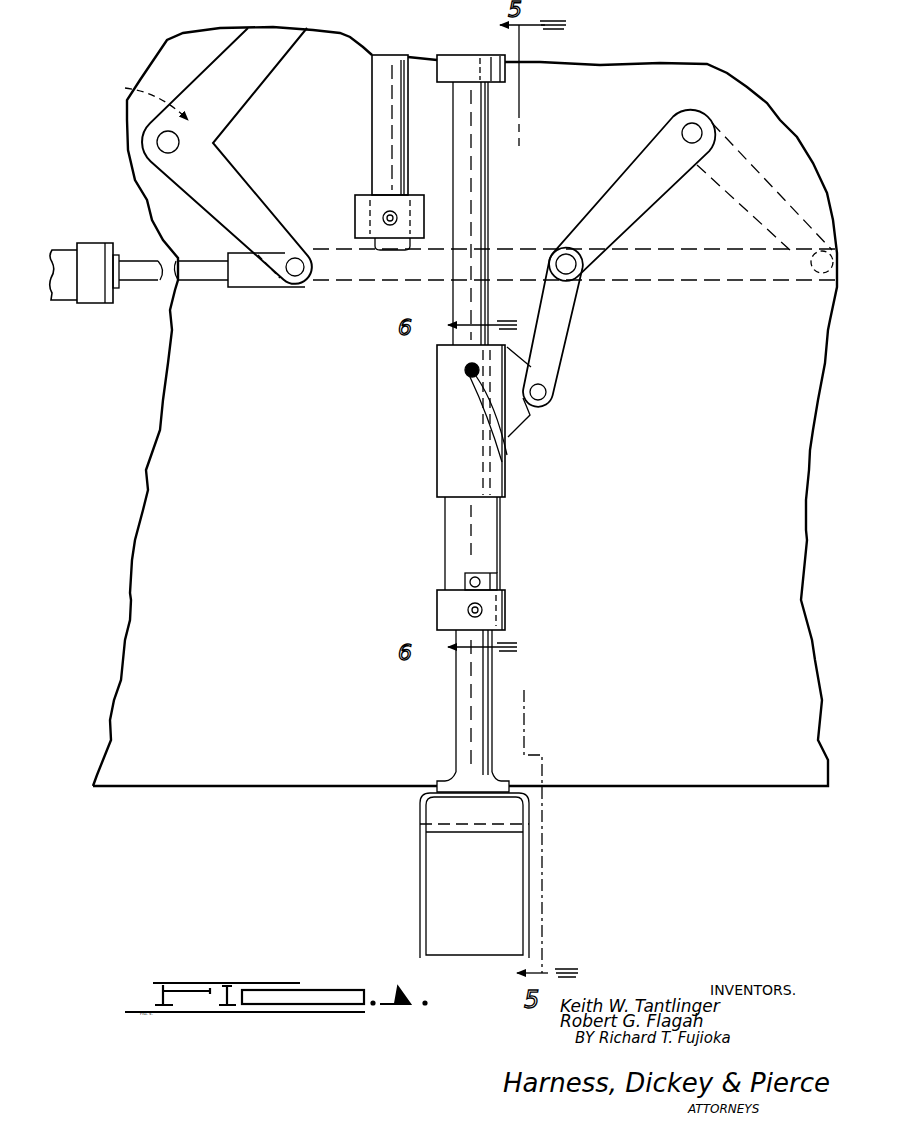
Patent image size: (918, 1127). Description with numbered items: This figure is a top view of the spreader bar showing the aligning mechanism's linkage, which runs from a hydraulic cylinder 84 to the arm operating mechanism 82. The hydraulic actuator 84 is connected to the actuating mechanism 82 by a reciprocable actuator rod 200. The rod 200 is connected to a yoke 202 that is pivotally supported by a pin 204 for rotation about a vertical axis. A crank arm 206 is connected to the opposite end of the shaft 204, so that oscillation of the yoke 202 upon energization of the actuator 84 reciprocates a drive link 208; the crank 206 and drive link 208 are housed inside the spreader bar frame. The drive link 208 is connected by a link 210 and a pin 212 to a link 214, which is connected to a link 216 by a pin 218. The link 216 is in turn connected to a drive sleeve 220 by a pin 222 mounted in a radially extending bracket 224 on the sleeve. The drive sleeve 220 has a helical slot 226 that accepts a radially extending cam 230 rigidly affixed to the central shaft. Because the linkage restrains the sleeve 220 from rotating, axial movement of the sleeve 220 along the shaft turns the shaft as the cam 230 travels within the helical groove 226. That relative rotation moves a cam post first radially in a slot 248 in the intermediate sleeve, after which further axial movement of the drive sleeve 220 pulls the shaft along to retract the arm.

The operating mechanism 82 is at (470, 487).
The hydraulic cylinder 84 is at (68, 242).
The actuator rod 200 is at (217, 286).
The yoke 202 is at (227, 156).
The pin 204 is at (186, 148).
The crank arm 206 is at (134, 98).
The drive link 208 is at (512, 245).
The link 210 is at (758, 150).
The pin 212 is at (698, 118).
The link 214 is at (654, 161).
The link 216 is at (590, 329).
The pin 218 is at (581, 280).
The drive sleeve 220 is at (514, 485).
The pin 222 is at (556, 394).
The bracket 224 is at (527, 420).
The helical slot 226 is at (505, 451).
The cam 230 is at (462, 371).
The slot 248 is at (500, 578).